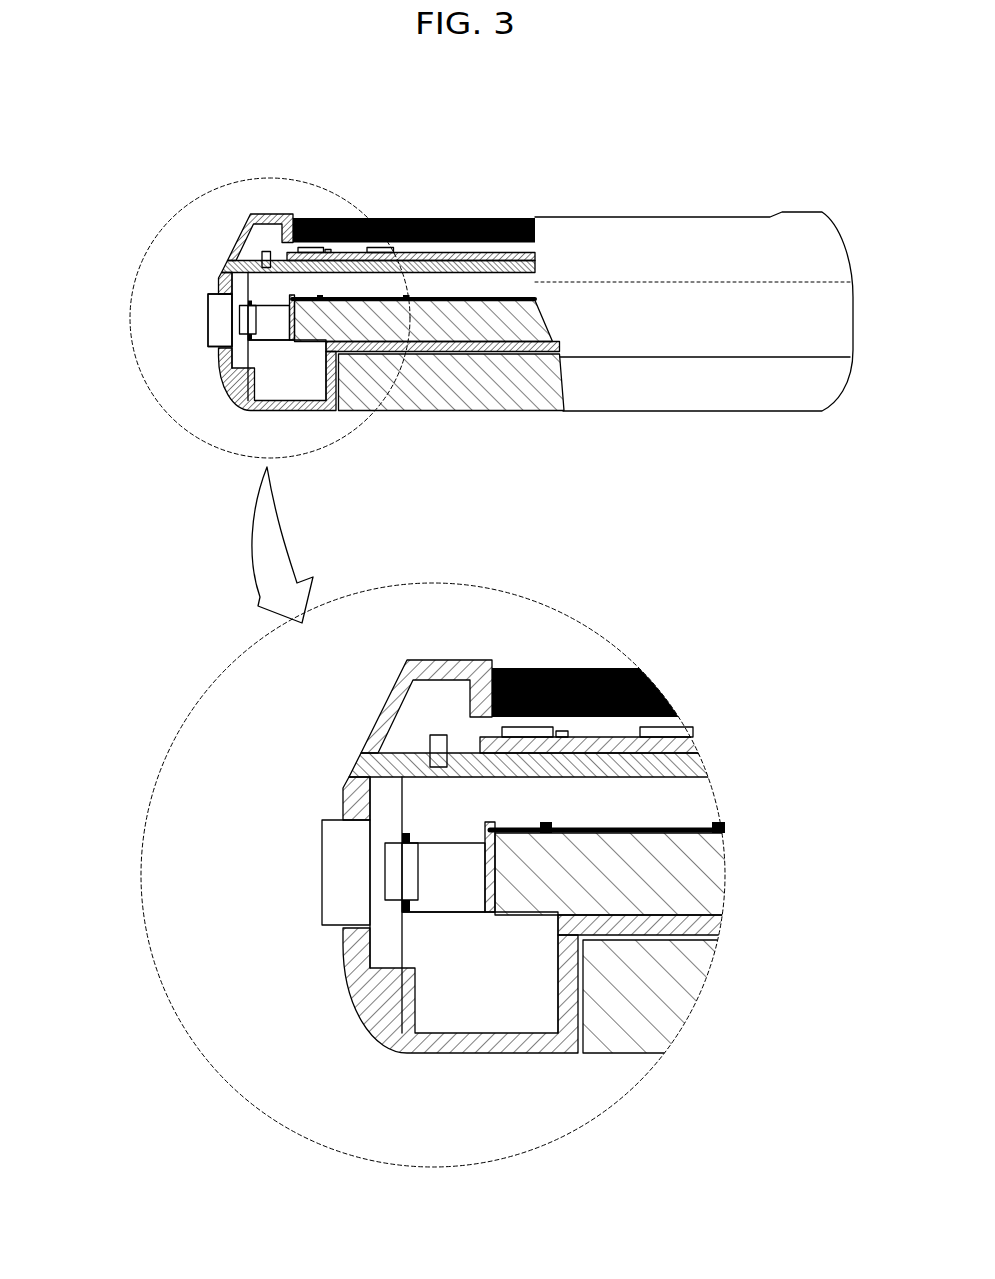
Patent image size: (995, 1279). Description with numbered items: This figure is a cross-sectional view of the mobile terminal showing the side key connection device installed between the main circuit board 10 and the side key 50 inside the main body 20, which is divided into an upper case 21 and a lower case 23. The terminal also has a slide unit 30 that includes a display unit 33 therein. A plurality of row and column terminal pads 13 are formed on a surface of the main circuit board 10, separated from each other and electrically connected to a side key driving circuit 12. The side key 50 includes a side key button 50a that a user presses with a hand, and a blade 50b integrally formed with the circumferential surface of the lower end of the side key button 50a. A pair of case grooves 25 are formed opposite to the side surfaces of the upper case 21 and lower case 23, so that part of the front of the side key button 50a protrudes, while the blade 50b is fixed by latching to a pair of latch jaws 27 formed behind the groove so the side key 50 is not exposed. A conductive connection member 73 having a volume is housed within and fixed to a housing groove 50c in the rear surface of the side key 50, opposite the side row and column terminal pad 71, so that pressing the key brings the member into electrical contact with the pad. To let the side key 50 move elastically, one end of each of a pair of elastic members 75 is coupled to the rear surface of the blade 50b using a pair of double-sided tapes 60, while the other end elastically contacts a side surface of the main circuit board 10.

The main circuit board 10 is at (486, 395).
The side key driving circuit 12 is at (728, 831).
The row and column terminal pads 13 is at (505, 824).
The main body 20 is at (80, 283).
The upper case 21 is at (208, 300).
The lower case 23 is at (232, 376).
The case grooves 25 is at (345, 828).
The latch jaws 27 is at (400, 752).
The slide unit 30 is at (262, 214).
The display unit 33 is at (437, 218).
The side key 50 is at (95, 915).
The side key button 50a is at (335, 882).
The blade 50b is at (388, 922).
The housing groove 50c is at (372, 887).
The double-sided tapes 60 is at (412, 872).
The side row and column terminal pad 71 is at (568, 730).
The conductive connection member 73 is at (482, 746).
The elastic members 75 is at (505, 665).